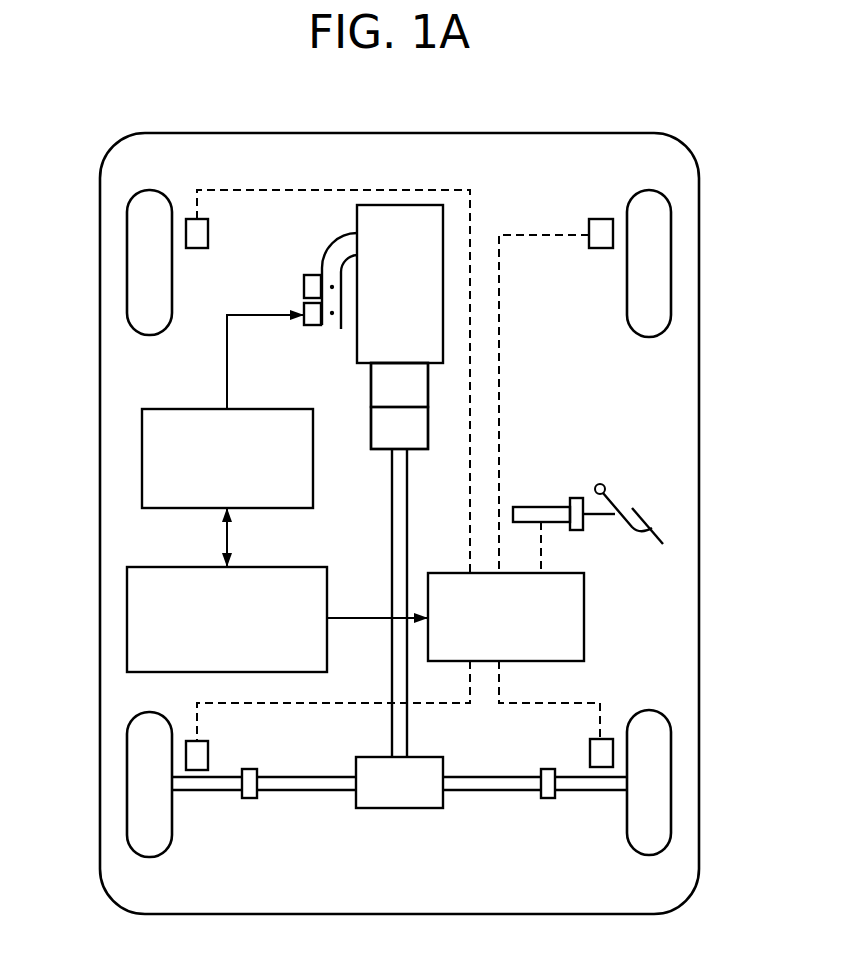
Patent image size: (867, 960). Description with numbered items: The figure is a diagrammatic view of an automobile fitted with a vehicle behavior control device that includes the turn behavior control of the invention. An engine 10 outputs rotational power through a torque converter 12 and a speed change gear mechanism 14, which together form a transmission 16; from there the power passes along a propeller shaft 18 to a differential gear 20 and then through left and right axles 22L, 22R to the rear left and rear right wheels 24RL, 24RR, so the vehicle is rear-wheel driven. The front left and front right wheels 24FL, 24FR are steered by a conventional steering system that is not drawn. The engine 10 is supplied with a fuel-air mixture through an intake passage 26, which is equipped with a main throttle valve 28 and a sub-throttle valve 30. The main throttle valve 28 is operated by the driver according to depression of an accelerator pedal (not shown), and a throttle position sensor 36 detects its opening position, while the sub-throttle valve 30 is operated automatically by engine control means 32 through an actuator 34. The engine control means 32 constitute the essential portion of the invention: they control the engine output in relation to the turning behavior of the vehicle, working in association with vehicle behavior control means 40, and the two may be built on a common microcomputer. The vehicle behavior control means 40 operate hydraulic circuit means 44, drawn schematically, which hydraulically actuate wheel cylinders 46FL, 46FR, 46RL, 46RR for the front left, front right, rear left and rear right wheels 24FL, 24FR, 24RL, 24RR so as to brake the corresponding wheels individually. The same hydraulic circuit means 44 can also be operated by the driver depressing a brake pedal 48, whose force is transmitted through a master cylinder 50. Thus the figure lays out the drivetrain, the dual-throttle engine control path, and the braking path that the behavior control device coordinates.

The engine 10 is at (400, 284).
The torque converter 12 is at (399, 385).
The speed change gear mechanism 14 is at (399, 428).
The transmission 16 is at (370, 404).
The propeller shaft 18 is at (392, 508).
The differential gear 20 is at (397, 800).
The left axle 22L is at (303, 790).
The right axle 22R is at (517, 790).
The front left wheel 24FL is at (128, 268).
The front right wheel 24FR is at (671, 263).
The rear left wheel 24RL is at (128, 770).
The rear right wheel 24RR is at (672, 770).
The intake passage 26 is at (333, 255).
The main throttle valve 28 is at (334, 289).
The sub-throttle valve 30 is at (334, 315).
The engine control means 32 is at (227, 411).
The actuator 34 is at (314, 320).
The throttle position sensor 36 is at (313, 287).
The vehicle behavior control means 40 is at (277, 620).
The hydraulic circuit means 44 is at (506, 617).
The front left wheel cylinder 46FL is at (197, 248).
The front right wheel cylinder 46FR is at (605, 248).
The rear left wheel cylinder 46RL is at (198, 760).
The rear right wheel cylinder 46RR is at (590, 752).
The brake pedal 48 is at (650, 518).
The master cylinder 50 is at (540, 507).